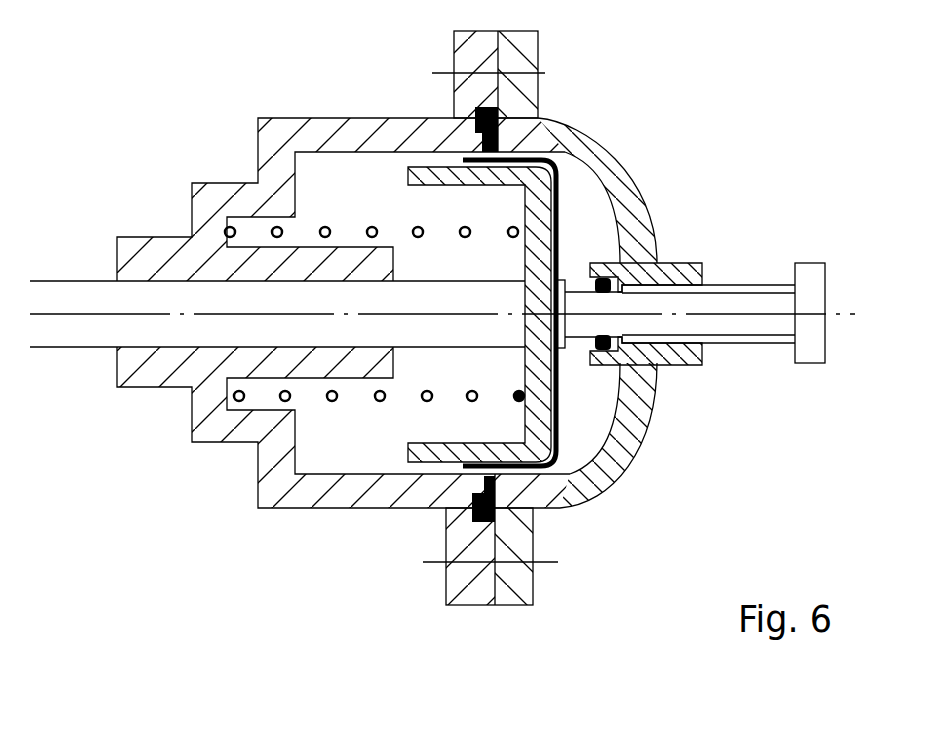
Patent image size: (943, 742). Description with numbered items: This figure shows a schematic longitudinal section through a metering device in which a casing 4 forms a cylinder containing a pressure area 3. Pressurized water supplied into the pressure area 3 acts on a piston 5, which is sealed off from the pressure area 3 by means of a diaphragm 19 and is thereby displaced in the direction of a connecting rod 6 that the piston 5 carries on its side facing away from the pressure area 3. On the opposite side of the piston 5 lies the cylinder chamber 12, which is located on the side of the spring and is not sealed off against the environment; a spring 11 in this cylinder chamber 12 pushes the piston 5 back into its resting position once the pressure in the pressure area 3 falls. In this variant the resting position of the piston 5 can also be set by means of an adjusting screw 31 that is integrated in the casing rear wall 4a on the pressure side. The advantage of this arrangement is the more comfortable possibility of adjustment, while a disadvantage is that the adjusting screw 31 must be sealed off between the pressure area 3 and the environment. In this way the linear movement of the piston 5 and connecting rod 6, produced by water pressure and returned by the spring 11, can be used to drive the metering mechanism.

The pressure area 3 is at (592, 233).
The casing 4 is at (383, 493).
The casing rear wall 4a is at (634, 405).
The piston 5 is at (545, 213).
The connecting rod 6 is at (72, 298).
The spring 11 is at (330, 400).
The cylinder chamber 12 is at (362, 445).
The diaphragm 19 is at (568, 468).
The adjusting screw 31 is at (753, 305).